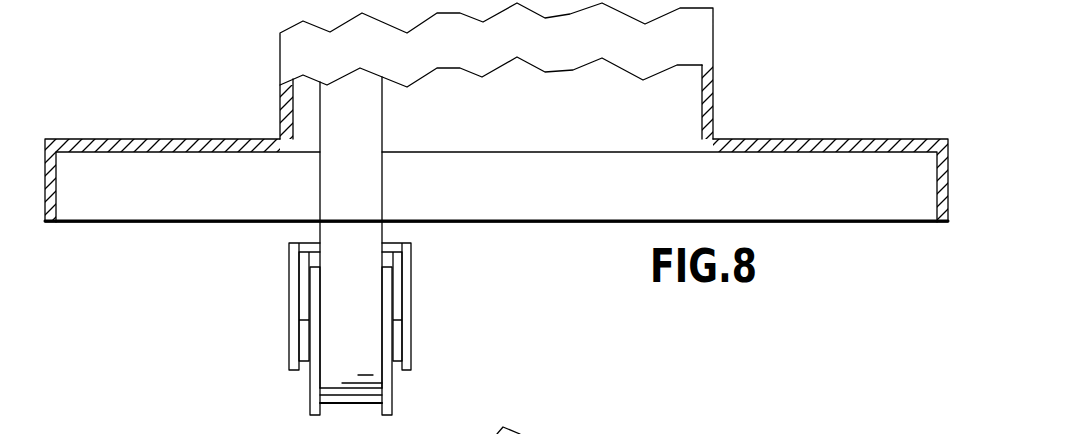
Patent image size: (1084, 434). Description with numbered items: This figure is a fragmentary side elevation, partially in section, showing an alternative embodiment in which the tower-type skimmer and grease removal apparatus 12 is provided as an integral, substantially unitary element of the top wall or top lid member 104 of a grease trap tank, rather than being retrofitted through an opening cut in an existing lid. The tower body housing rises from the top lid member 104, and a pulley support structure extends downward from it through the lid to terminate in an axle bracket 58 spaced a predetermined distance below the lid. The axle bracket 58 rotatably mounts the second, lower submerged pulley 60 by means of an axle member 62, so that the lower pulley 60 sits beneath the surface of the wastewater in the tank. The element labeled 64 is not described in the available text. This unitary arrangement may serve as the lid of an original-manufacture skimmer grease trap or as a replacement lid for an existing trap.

The tower-type skimmer and grease removal apparatus 12 is at (245, 66).
The top lid member 104 is at (843, 140).
The shaft 64 is at (383, 184).
The axle bracket 58 is at (413, 306).
The axle member 62 is at (300, 340).
The second, lower submerged pulley 60 is at (309, 397).